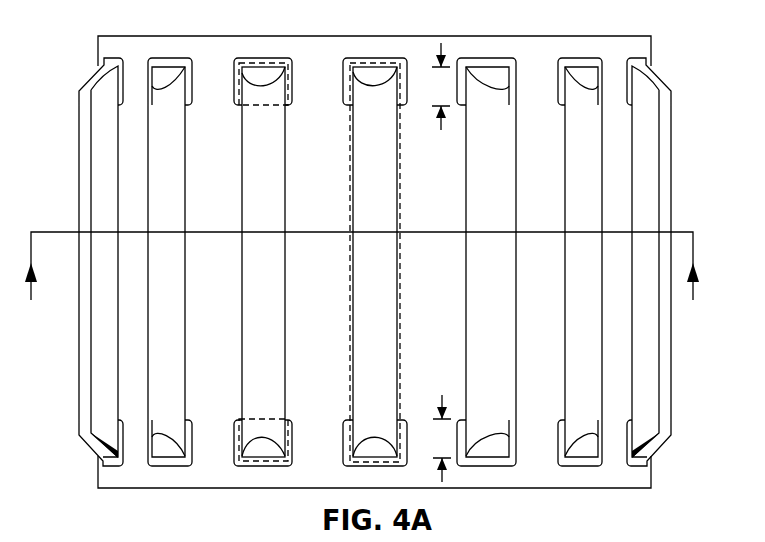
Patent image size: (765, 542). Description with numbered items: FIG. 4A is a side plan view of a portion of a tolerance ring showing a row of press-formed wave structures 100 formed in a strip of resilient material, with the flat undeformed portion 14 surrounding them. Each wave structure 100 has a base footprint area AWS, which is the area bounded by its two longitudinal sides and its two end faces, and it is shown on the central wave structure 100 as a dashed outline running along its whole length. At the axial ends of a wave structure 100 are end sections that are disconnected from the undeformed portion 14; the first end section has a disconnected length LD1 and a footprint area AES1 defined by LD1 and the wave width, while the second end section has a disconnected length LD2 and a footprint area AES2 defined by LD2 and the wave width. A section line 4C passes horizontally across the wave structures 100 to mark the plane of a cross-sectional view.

The wave structure 100 is at (413, 269).
The undeformed portion 14 is at (137, 410).
The footprint area of first end section AES1 is at (263, 63).
The footprint area of second end section AES2 is at (262, 461).
The base footprint area of wave structure AWS is at (388, 234).
The first disconnected length LD1 is at (440, 86).
The second disconnected length LD2 is at (439, 438).
The section line 4C- 4C is at (365, 282).